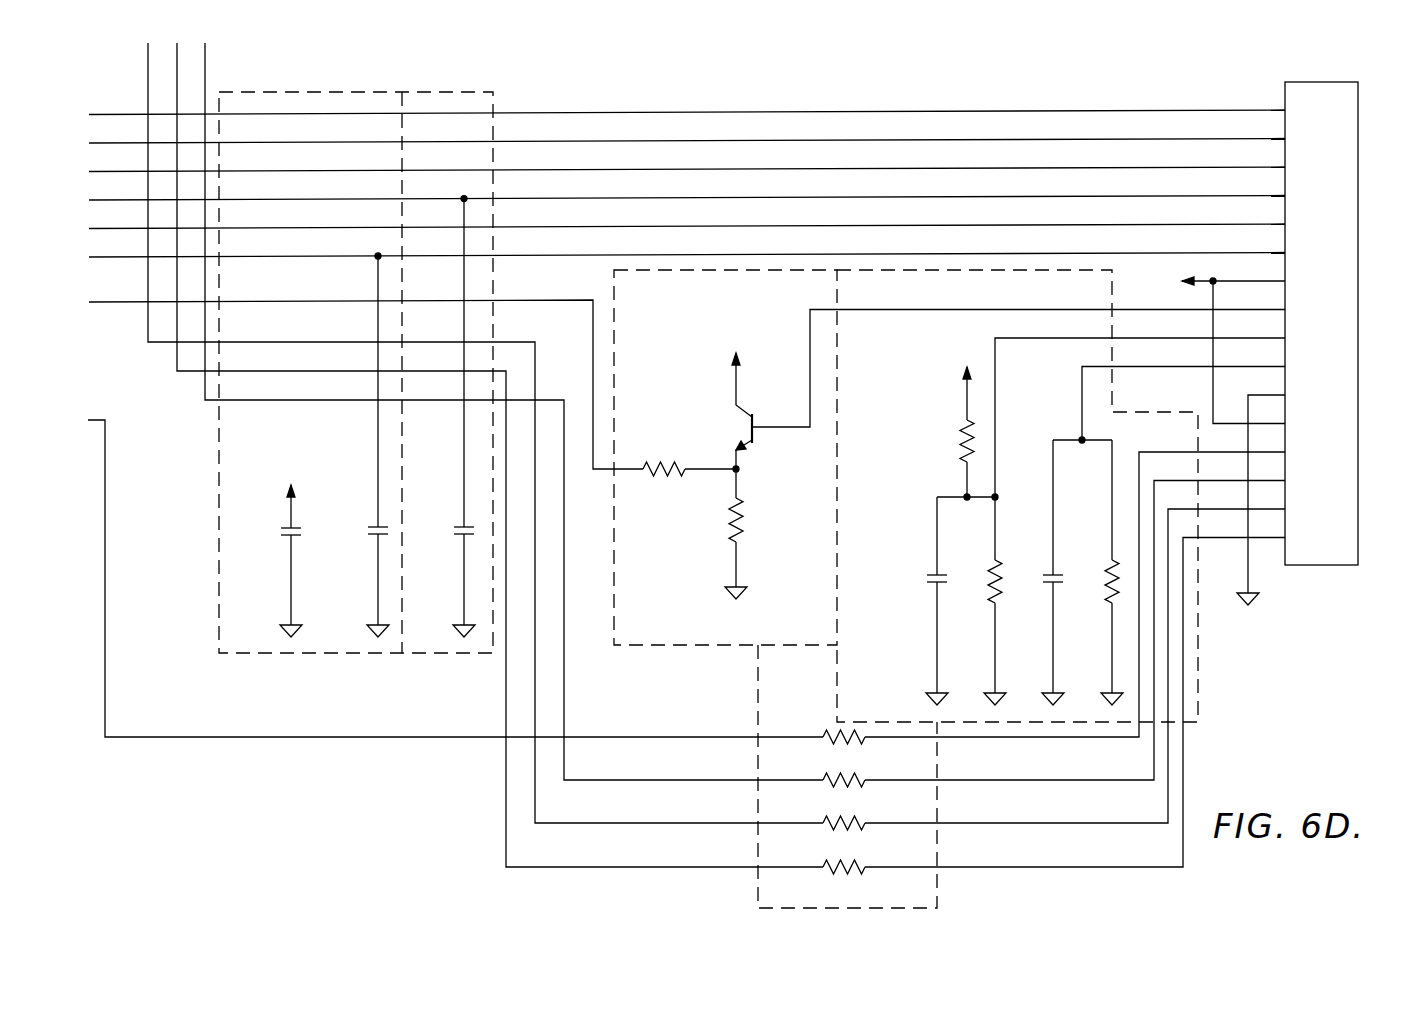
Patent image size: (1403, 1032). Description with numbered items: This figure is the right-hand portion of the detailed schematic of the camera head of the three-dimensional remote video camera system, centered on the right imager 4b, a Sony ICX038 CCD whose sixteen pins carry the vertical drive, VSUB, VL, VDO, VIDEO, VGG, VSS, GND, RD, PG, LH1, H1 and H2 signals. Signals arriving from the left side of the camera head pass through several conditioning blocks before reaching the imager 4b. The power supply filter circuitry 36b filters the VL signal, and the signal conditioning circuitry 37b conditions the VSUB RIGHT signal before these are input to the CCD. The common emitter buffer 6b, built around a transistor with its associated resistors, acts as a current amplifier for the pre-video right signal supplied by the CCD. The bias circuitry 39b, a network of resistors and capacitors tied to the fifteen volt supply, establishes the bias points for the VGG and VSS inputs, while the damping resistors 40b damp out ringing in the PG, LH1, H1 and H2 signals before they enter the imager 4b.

The imager 4b is at (1360, 112).
The common emitter buffer 6b is at (650, 648).
The power supply filter circuitry 36b is at (217, 553).
The signal conditioning circuitry 37b is at (426, 655).
The bias circuitry 39b is at (1200, 690).
The damping resistors 40b is at (938, 878).